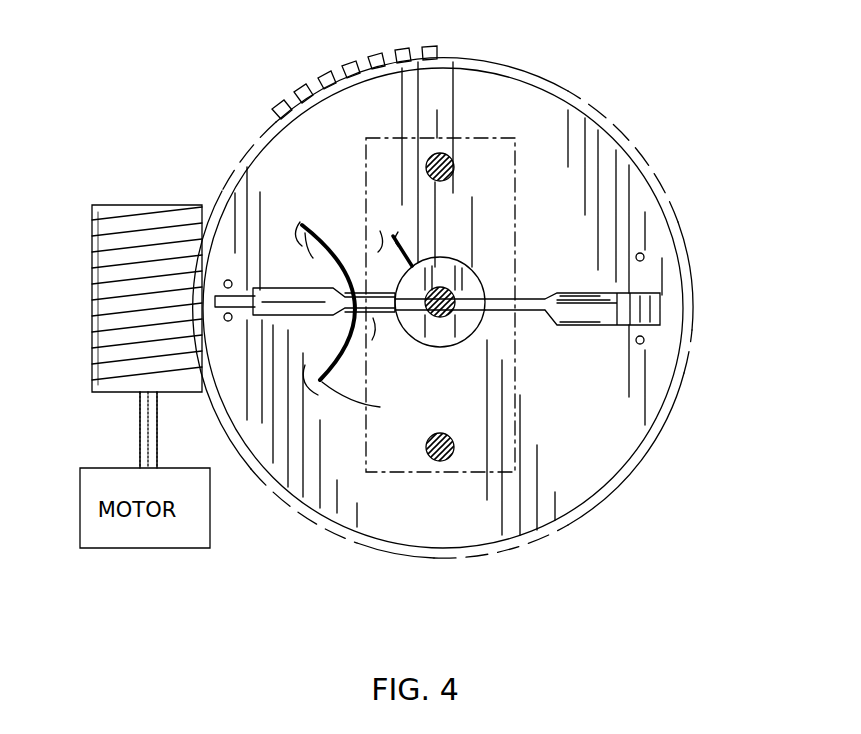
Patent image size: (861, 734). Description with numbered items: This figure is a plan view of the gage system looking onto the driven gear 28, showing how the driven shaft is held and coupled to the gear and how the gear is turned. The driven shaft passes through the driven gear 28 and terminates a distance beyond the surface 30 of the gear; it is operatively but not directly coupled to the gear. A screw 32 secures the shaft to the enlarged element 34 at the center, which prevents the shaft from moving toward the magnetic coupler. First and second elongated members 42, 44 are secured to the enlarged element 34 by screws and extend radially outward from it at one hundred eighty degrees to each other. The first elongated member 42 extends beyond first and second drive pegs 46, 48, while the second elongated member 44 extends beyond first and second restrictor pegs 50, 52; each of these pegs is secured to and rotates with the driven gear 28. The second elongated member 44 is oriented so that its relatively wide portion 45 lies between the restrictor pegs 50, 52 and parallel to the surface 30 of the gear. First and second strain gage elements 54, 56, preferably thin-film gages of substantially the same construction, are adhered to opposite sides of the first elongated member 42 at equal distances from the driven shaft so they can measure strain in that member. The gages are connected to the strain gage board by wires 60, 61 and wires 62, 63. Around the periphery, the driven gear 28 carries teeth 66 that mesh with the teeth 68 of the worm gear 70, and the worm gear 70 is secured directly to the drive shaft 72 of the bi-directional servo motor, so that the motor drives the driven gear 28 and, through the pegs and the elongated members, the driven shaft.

The driven gear 28 is at (473, 530).
The surface of the driven gear 30 is at (452, 530).
The screw 32 is at (452, 314).
The enlarged element 34 is at (430, 262).
The first elongated member 42 is at (290, 303).
The second elongated member 44 is at (590, 308).
The relatively wide portion 45 is at (653, 305).
The first drive peg 46 is at (229, 281).
The second drive peg 48 is at (230, 322).
The first restrictor peg 50 is at (643, 248).
The second restrictor peg 52 is at (643, 347).
The first strain gage element 54 is at (373, 320).
The second strain gage element 56 is at (376, 293).
The wire 60 is at (367, 401).
The wire 61 is at (323, 374).
The wire 62 is at (332, 248).
The wire 63 is at (293, 262).
The teeth 66 is at (320, 84).
The teeth of worm gear 68 is at (107, 355).
The worm gear 70 is at (125, 205).
The drive shaft 72 is at (143, 425).